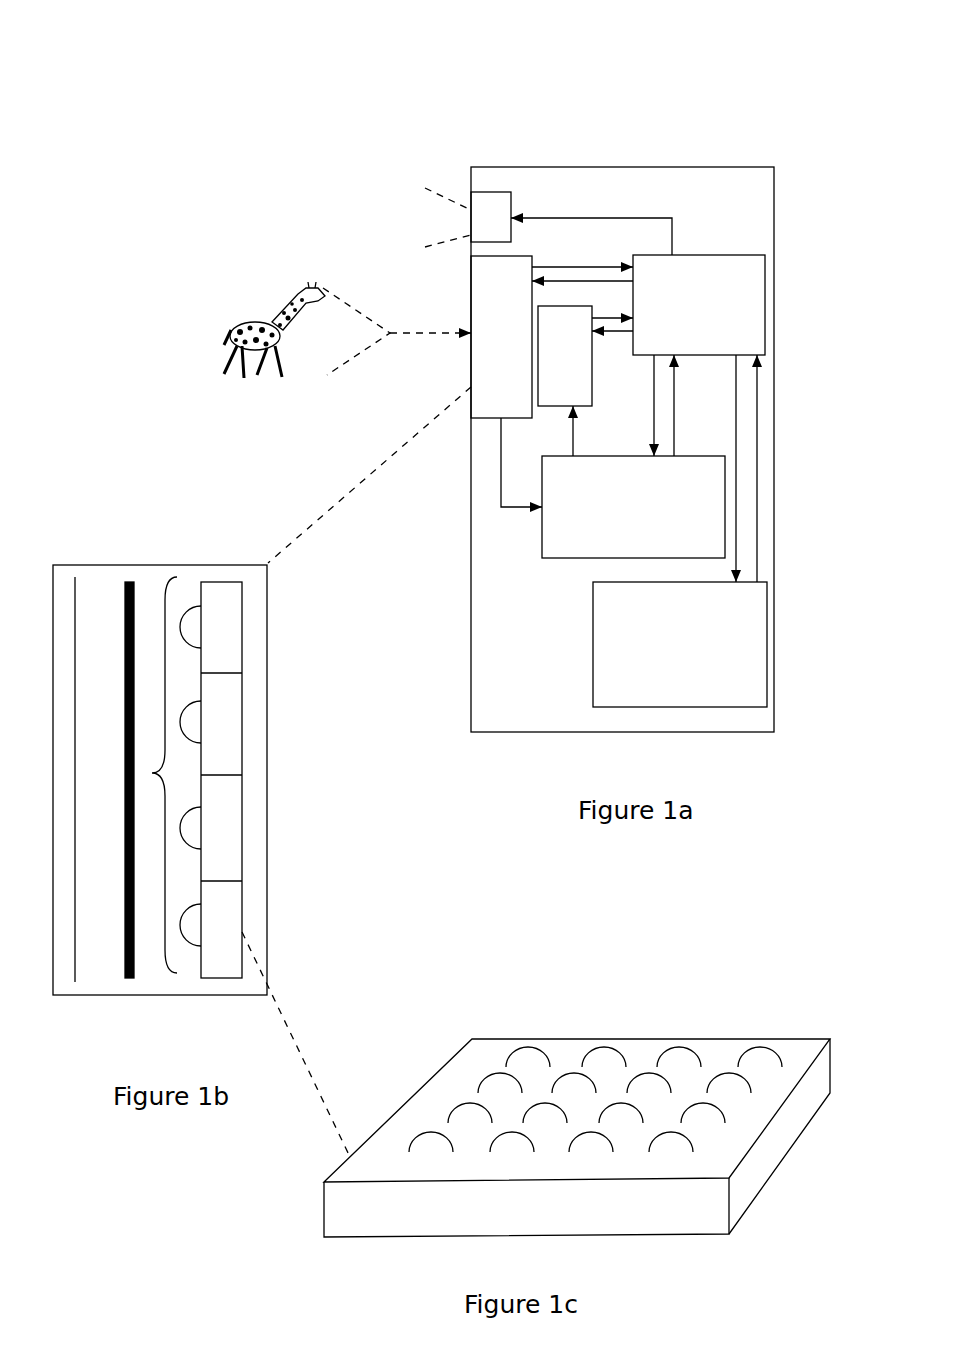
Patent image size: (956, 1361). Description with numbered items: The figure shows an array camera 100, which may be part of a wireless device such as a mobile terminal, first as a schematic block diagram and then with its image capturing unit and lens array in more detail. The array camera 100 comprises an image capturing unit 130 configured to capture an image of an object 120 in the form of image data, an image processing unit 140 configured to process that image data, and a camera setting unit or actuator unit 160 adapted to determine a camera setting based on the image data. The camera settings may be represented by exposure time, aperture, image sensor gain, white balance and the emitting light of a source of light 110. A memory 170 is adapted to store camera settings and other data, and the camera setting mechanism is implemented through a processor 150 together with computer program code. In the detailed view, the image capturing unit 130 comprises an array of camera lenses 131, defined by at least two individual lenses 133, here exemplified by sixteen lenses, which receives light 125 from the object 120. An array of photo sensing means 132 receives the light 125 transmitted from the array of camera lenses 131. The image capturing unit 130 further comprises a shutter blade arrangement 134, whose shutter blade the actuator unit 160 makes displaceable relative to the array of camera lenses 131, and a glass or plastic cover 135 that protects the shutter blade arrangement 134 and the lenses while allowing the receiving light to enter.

In FIG. 1a, the array camera 100 is at (707, 33).
In FIG. 1a, the source of light 110 is at (497, 192).
In FIG. 1a, the object 120 is at (264, 360).
In FIG. 1a, the light 125 is at (397, 358).
In FIG. 1a, the image capturing unit 130 is at (501, 337).
In FIG. 1b, the array of camera lenses 131 is at (152, 773).
In FIG. 1c, the array of camera lenses 131 is at (616, 966).
In FIG. 1b, the array of photo sensing means 132 is at (243, 718).
In FIG. 1b, the individual lens 133 is at (197, 947).
In FIG. 1c, the individual lens 133 is at (593, 1134).
In FIG. 1b, the shutter blade arrangement 134 is at (125, 942).
In FIG. 1b, the glass or plastic cover 135 is at (75, 610).
In FIG. 1a, the image processing unit 140 is at (633, 507).
In FIG. 1a, the processor 150 is at (699, 305).
In FIG. 1a, the camera setting unit or actuator unit 160 is at (565, 356).
In FIG. 1a, the memory 170 is at (680, 644).